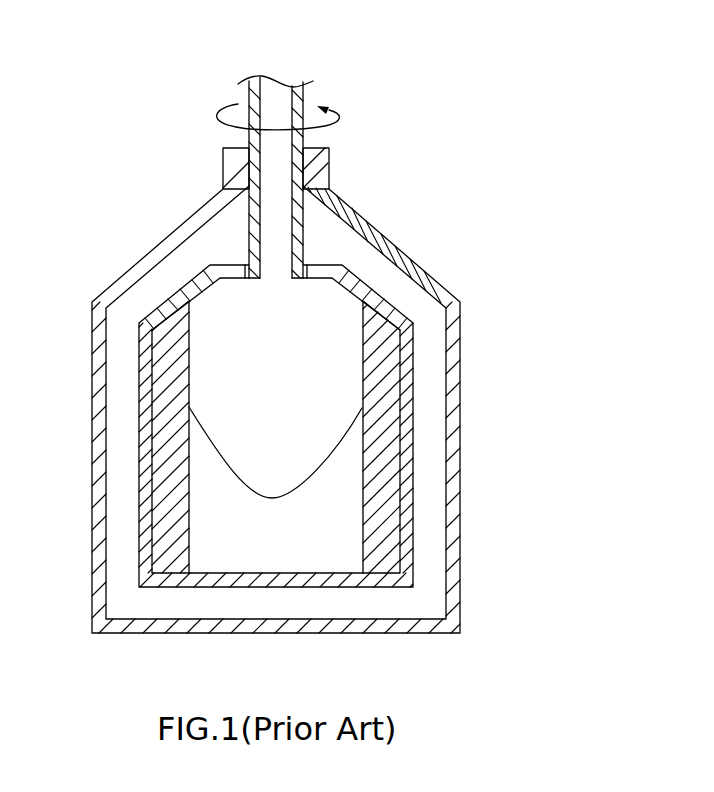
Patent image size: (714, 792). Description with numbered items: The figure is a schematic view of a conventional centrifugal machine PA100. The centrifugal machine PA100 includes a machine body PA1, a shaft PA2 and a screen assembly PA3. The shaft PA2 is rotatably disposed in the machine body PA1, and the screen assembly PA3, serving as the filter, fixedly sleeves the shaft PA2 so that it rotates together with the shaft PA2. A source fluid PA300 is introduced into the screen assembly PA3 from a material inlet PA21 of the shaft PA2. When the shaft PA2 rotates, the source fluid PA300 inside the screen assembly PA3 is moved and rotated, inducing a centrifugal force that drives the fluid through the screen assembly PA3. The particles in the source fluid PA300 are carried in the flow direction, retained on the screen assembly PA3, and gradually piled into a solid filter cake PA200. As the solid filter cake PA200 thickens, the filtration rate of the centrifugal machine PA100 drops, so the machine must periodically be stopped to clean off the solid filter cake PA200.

The centrifugal machine PA100 is at (126, 88).
The machine body PA1 is at (322, 172).
The shaft PA2 is at (236, 221).
The material inlet PA21 is at (280, 290).
The screen assembly PA3 is at (143, 432).
The solid filter cake PA200 is at (393, 502).
The source fluid PA300 is at (249, 470).